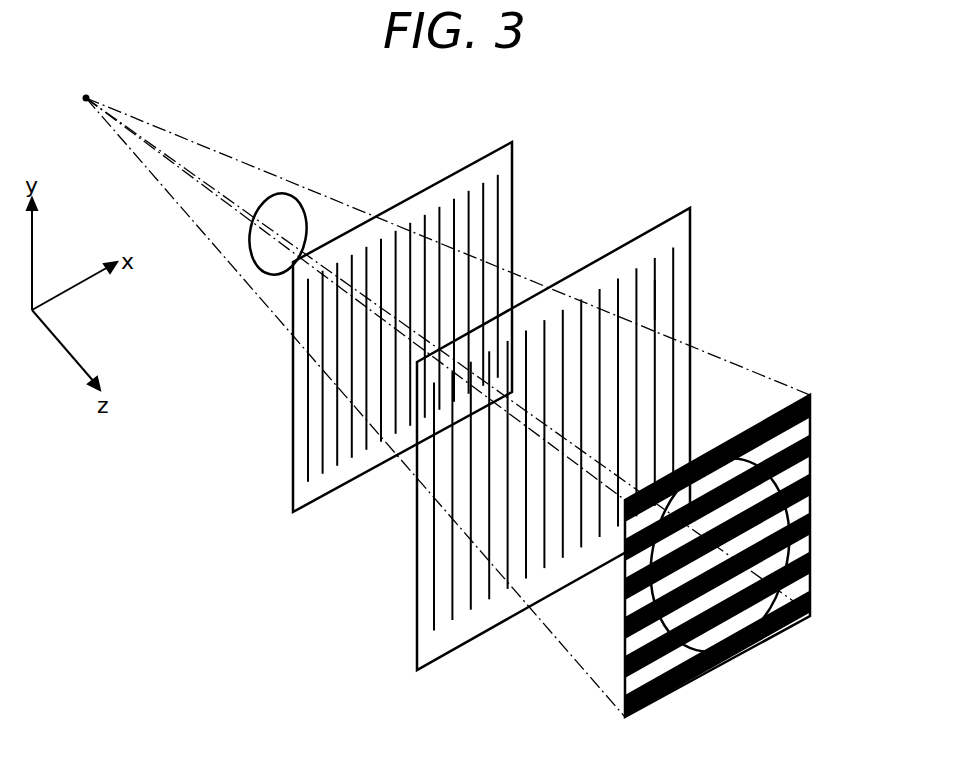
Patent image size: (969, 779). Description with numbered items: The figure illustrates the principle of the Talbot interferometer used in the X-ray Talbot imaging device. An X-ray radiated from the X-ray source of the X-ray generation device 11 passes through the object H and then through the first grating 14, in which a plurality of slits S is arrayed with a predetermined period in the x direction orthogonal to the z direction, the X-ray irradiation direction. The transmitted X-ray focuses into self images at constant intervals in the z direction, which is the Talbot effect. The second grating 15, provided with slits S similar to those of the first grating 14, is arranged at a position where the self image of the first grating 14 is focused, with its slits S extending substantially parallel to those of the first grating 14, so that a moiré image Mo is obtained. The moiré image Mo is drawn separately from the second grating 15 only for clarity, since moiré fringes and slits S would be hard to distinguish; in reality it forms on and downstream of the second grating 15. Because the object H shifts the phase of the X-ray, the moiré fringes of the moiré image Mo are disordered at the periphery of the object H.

The X-ray generation device 11 is at (89, 95).
The first grating 14 is at (446, 177).
The second grating 15 is at (640, 232).
The object H is at (297, 196).
The slit S is at (656, 298).
The moiré image Mo is at (811, 457).